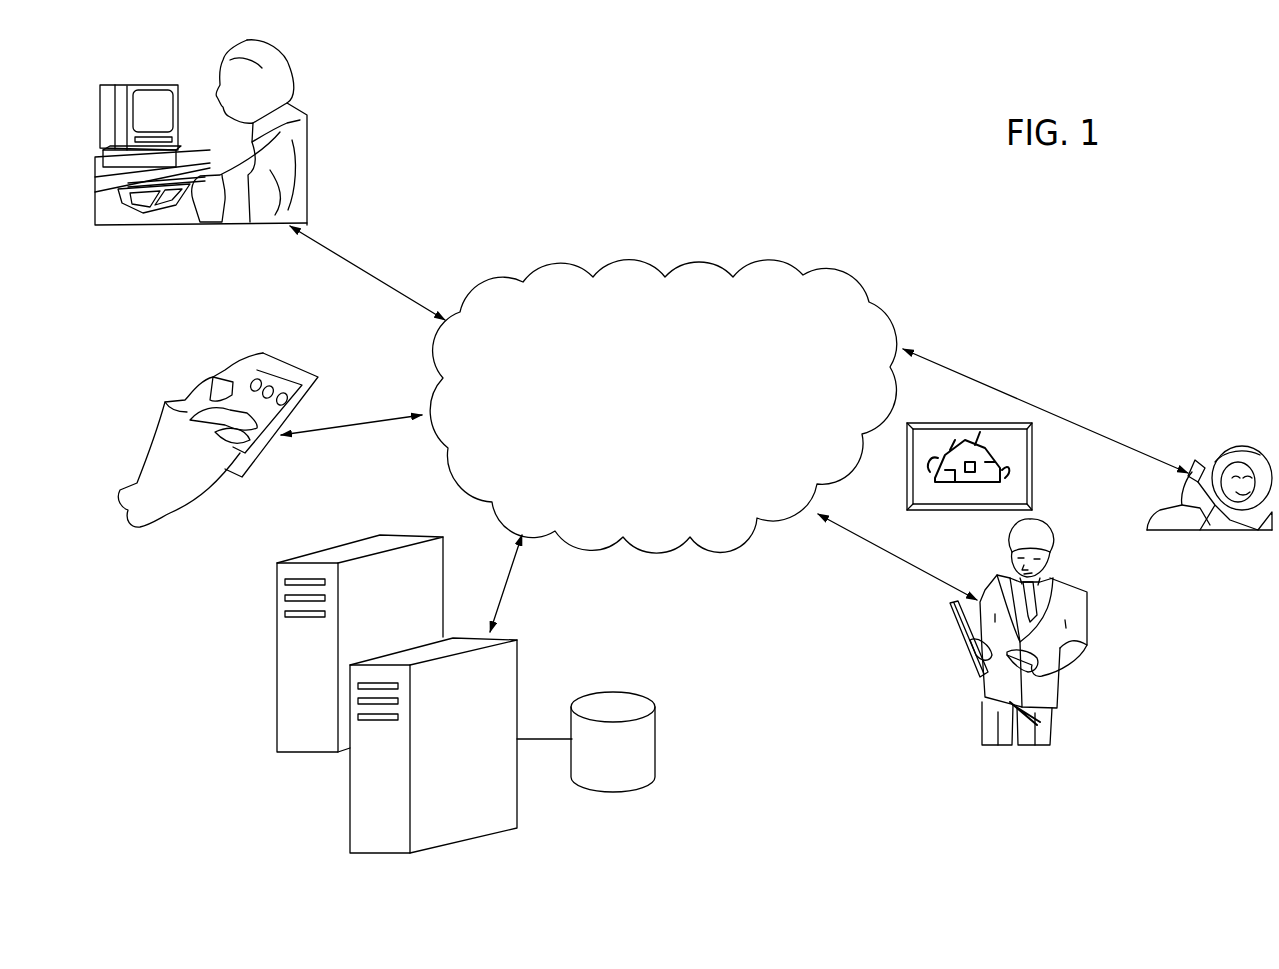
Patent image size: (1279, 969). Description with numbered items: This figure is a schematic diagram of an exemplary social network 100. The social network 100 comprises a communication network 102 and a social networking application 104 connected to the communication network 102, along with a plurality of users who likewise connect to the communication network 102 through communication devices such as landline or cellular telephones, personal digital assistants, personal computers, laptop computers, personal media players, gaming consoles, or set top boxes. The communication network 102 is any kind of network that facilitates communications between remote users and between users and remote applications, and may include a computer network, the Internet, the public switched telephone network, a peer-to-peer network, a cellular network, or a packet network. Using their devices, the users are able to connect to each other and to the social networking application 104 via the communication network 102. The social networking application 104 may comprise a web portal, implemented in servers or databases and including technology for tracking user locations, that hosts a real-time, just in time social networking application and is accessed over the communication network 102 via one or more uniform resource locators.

The social network 100 is at (528, 155).
The communication network 102 is at (634, 475).
The social networking application 104 is at (517, 665).